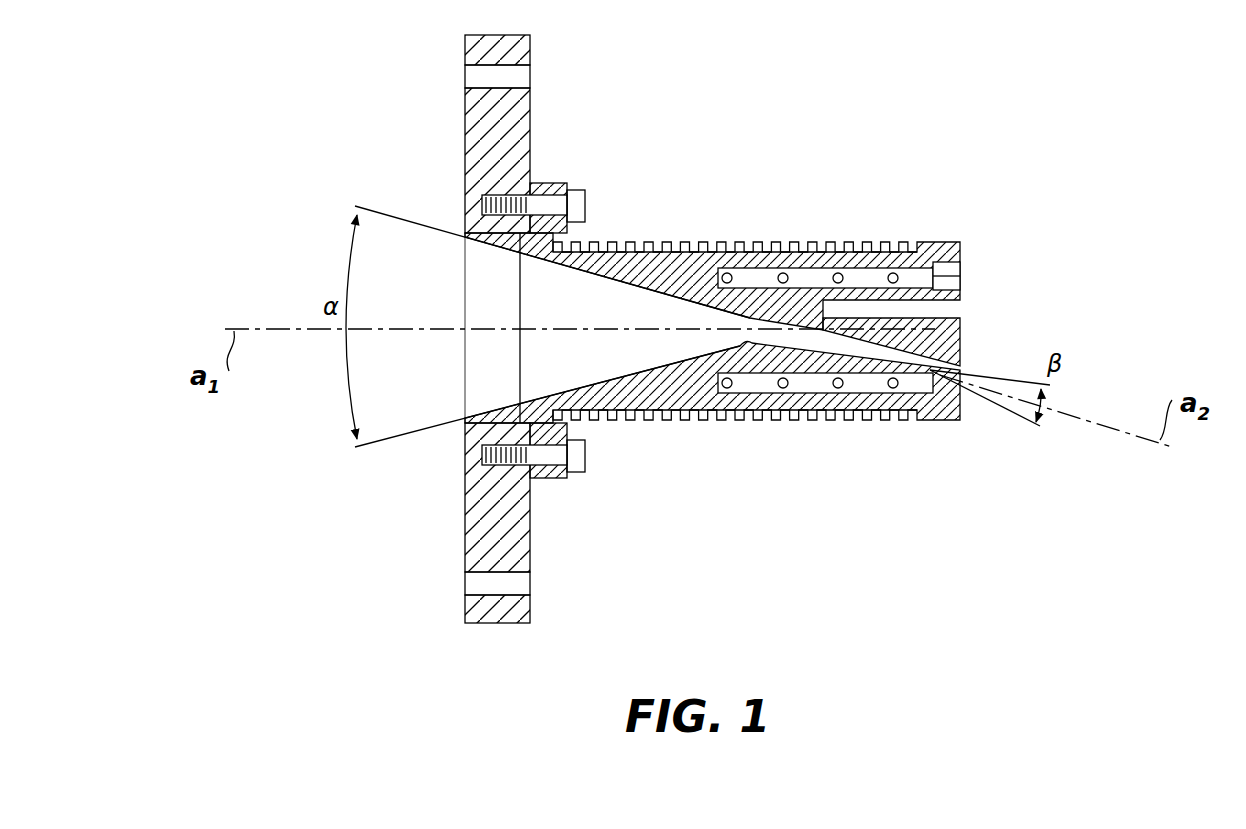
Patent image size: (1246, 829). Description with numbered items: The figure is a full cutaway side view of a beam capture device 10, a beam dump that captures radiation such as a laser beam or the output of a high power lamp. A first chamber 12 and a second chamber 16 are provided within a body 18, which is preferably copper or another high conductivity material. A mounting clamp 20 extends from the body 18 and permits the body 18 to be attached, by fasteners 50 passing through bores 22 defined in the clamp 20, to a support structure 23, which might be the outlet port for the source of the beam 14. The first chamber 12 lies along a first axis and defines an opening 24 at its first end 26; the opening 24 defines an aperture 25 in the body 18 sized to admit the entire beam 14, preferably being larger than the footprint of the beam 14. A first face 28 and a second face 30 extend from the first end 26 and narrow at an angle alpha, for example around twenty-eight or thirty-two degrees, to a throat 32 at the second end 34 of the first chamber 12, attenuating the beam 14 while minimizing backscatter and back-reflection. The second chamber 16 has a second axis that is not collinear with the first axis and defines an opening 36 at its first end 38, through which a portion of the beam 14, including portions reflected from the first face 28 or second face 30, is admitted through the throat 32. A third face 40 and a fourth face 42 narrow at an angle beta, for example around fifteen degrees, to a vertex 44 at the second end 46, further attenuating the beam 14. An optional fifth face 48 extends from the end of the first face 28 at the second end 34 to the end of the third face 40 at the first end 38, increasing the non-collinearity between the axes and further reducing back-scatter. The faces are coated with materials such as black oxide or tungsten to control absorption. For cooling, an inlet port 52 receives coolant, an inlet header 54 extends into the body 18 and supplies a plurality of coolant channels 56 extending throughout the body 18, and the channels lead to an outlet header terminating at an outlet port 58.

The beam capture device 10 is at (830, 95).
The first chamber 12 is at (596, 301).
The beam 14 is at (222, 290).
The second chamber 16 is at (836, 337).
The body 18 is at (686, 250).
The mounting clamp 20 is at (598, 128).
The bores 22 is at (541, 184).
The support structure 23 is at (470, 135).
The opening 24 is at (546, 297).
The aperture 25 is at (518, 302).
The first end 26 is at (558, 402).
The first face 28 is at (695, 308).
The second face 30 is at (648, 422).
The throat 32 is at (773, 319).
The second end 34 is at (742, 350).
The opening 36 is at (816, 324).
The first end 38 is at (760, 356).
The third face 40 is at (900, 246).
The fourth face 42 is at (822, 375).
The vertex 44 is at (940, 352).
The second end 46 is at (878, 377).
The fifth face 48 is at (758, 299).
The fasteners 50 is at (566, 205).
The inlet port 52 is at (955, 286).
The inlet header 54 is at (955, 267).
The coolant channels 56 is at (733, 386).
The outlet port 58 is at (965, 378).